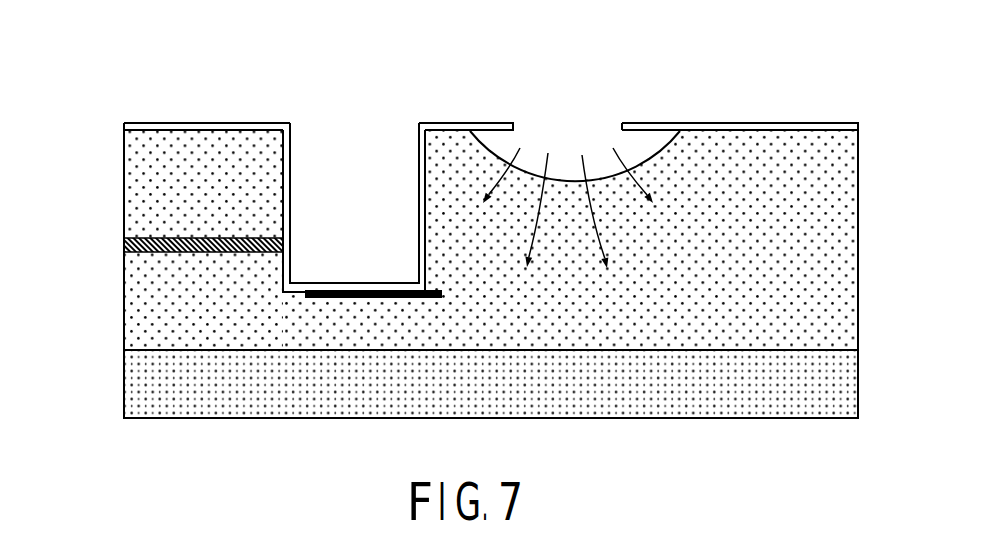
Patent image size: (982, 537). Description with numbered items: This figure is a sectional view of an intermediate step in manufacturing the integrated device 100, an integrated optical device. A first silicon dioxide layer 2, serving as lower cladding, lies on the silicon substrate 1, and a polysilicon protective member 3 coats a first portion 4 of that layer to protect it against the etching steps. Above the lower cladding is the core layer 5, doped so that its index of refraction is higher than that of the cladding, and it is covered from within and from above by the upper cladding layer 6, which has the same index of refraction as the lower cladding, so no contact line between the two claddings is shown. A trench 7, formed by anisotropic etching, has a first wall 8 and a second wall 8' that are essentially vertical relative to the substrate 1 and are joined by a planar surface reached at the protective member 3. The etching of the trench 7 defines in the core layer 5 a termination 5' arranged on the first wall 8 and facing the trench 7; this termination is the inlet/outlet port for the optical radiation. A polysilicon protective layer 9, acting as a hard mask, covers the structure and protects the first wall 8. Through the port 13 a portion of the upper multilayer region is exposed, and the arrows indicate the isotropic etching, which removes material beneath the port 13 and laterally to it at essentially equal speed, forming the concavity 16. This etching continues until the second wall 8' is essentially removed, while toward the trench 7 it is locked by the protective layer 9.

The silicon substrate 1 is at (145, 377).
The first silicon dioxide layer 2 is at (145, 298).
The protective member 3 is at (307, 295).
The first portion 4 is at (370, 341).
The core layer 5 is at (169, 242).
The termination 5' is at (310, 191).
The upper cladding layer 6 is at (140, 172).
The trench 7 is at (370, 222).
The first wall 8 is at (338, 170).
The second wall 8' is at (423, 170).
The protective layer 9 is at (127, 130).
The port 13 is at (581, 143).
The concavity 16 is at (597, 158).
The integrated device 100 is at (220, 99).